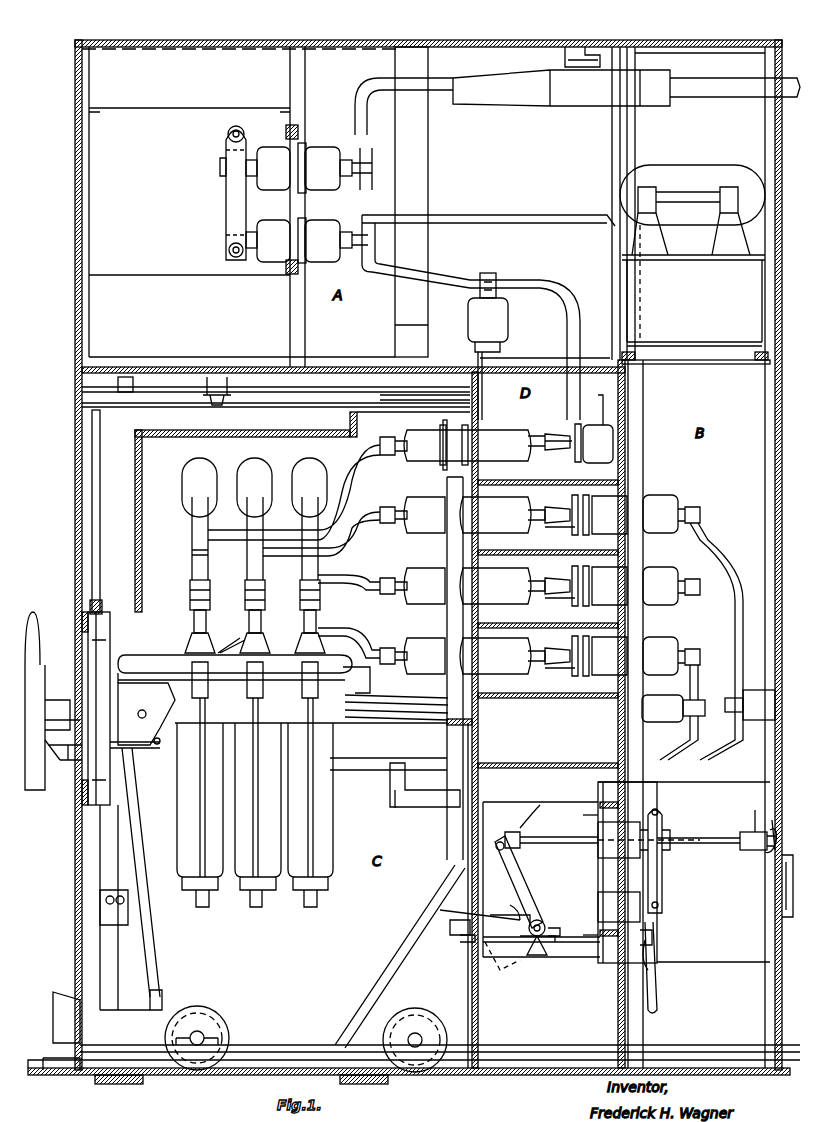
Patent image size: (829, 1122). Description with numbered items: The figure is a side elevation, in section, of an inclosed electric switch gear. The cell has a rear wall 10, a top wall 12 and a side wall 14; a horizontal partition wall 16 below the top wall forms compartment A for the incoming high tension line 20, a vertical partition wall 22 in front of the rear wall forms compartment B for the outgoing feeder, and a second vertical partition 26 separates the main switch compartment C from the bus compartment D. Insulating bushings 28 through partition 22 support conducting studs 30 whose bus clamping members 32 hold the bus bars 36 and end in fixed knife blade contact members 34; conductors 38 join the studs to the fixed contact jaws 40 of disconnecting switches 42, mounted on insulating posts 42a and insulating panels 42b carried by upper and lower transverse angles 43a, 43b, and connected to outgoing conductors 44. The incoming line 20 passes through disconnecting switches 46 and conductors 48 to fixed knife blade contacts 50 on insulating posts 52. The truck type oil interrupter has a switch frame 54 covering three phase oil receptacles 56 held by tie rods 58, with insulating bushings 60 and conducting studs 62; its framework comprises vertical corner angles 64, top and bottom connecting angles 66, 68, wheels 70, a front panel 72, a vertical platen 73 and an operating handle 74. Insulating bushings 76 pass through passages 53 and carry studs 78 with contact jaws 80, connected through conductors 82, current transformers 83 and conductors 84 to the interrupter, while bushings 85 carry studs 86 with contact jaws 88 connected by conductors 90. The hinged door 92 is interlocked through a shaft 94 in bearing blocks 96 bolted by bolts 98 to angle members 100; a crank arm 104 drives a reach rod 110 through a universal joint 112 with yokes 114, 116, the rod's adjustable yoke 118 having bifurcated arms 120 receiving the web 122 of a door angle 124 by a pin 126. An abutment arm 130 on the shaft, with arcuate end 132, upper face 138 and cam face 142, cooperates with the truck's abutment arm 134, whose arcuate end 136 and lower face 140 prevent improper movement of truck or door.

The rear wall 10 is at (780, 602).
The top wall 12 is at (660, 40).
The side wall 14 is at (755, 408).
The horizontal partition wall 16 is at (334, 366).
The incoming high tension line 20 is at (697, 100).
The vertical partition wall 22 is at (640, 398).
The second vertical partition 26 is at (482, 752).
The insulating bushing 28 is at (660, 585).
The conducting stud 30 is at (688, 506).
The bus clamping member 32 is at (560, 608).
The fixed knife blade contact member 34 is at (552, 509).
The bus bar 36 is at (400, 562).
The conductor 38 is at (738, 640).
The fixed contact jaw 40 is at (670, 835).
The disconnecting switch 42 is at (662, 880).
The insulating post 42a is at (623, 858).
The insulating panel 42b is at (610, 858).
The upper transverse angle 43a is at (578, 820).
The lower transverse angle 43b is at (580, 918).
The outgoing feeder conductor 44 is at (658, 1000).
The disconnecting switch 46 is at (230, 205).
The conductor 48 is at (536, 284).
The fixed knife blade contact member 50 is at (572, 436).
The insulating post 52 is at (598, 429).
The passage 53 is at (476, 428).
The switch frame 54 is at (289, 731).
The phase oil receptacle 56 is at (177, 818).
The tie rod 58 is at (200, 770).
The insulating bushing 60 is at (196, 640).
The conducting stud 62 is at (190, 612).
The vertical corner angle 64 is at (105, 980).
The horizontal top connecting angle 66 is at (405, 398).
The horizontal bottom connecting angle 68 is at (305, 1044).
The wheel 70 is at (215, 1025).
The front panel 72 is at (76, 548).
The vertical platen 73 is at (118, 700).
The operating handle 74 is at (35, 690).
The insulating bushing 76 is at (467, 445).
The conducting stud 78 is at (396, 458).
The contact jaw 80 is at (538, 434).
The conductor 82 is at (348, 462).
The current transformer 83 is at (254, 487).
The conductor 84 is at (208, 575).
The insulating bushing 85 is at (495, 585).
The conducting stud 86 is at (404, 648).
The contact jaw 88 is at (540, 510).
The conductor 90 is at (360, 572).
The hinged door 92 is at (780, 775).
The interconnecting shaft 94 is at (540, 920).
The bearing block 96 is at (538, 906).
The bolt 98 is at (550, 945).
The angle member 100 is at (588, 960).
The crank arm 104 is at (522, 876).
The reach rod 110 is at (712, 838).
The universal joint 112 is at (515, 828).
The yoke 114 is at (538, 807).
The yoke 116 is at (493, 857).
The adjustable yoke 118 is at (745, 850).
The bifurcated arm 120 is at (745, 812).
The horizontal web 122 is at (770, 848).
The angle 124 is at (778, 830).
The pin 126 is at (780, 815).
The abutment arm 130 is at (533, 962).
The arcuate end portion 132 is at (502, 969).
The abutment arm 134 is at (508, 899).
The arcuate end portion 136 is at (508, 907).
The upper horizontal face 138 is at (460, 905).
The lower horizontal face 140 is at (468, 942).
The inclined cam face 142 is at (448, 922).